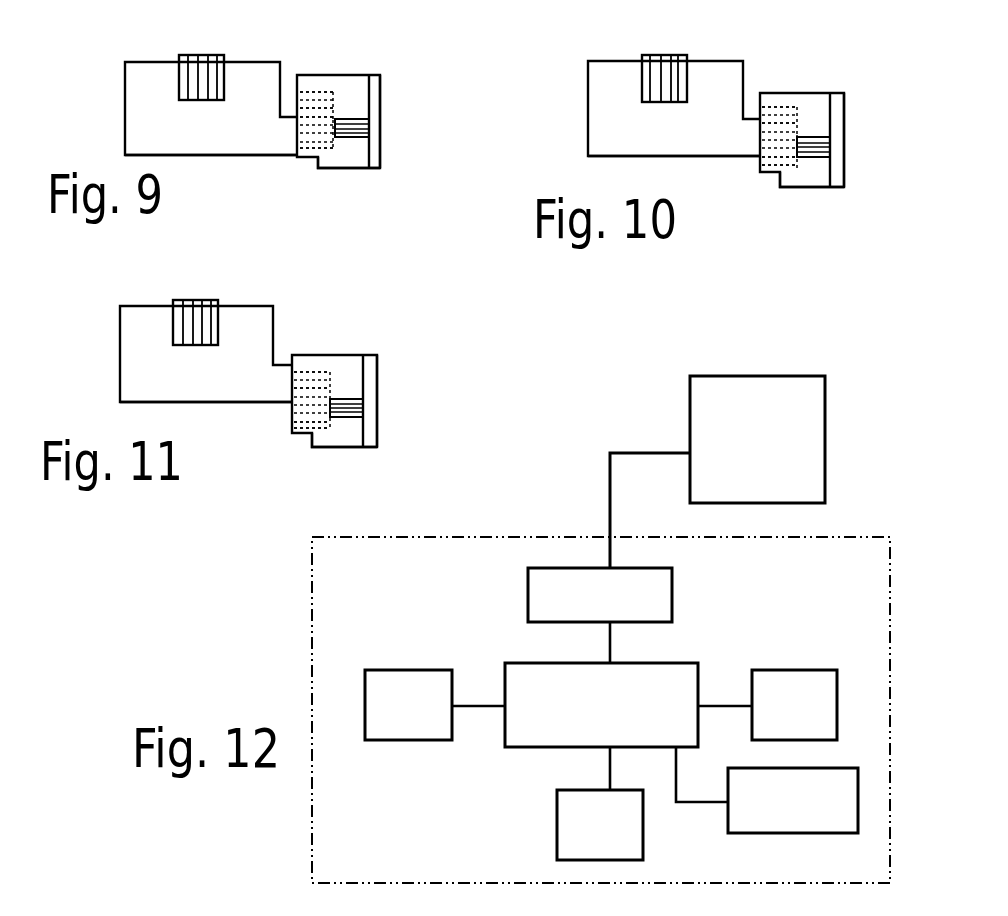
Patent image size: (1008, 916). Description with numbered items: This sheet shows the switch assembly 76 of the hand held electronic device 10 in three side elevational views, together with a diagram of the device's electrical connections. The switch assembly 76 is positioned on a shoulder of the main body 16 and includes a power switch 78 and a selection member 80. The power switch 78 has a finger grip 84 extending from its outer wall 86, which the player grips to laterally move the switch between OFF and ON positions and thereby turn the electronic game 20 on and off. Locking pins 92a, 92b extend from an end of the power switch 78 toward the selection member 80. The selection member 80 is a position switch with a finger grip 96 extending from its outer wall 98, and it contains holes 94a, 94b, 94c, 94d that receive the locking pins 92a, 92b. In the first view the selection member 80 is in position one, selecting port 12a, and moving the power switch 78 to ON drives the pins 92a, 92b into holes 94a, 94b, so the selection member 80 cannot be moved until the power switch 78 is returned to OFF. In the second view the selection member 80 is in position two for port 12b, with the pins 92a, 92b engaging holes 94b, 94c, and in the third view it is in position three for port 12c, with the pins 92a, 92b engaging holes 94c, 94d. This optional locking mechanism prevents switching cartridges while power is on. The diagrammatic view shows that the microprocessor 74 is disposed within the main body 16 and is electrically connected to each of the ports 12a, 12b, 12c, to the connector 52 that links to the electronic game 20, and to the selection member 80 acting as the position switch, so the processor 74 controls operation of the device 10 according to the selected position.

In FIG. 12, the hand held electronic device 10 is at (293, 627).
In FIG. 12, the game cartridge port 12a is at (797, 670).
In FIG. 12, the game cartridge port 12b is at (400, 670).
In FIG. 12, the game cartridge port 12c is at (556, 837).
In FIG. 12, the main body 16 is at (528, 536).
In FIG. 12, the hand held electronic game 20 is at (800, 403).
In FIG. 12, the connector 52 is at (530, 592).
In FIG. 12, the microprocessor 74 is at (683, 672).
In FIG. 9, the switch assembly 76 is at (117, 72).
In FIG. 10, the switch assembly 76 is at (580, 74).
In FIG. 11, the switch assembly 76 is at (110, 318).
In FIG. 9, the power switch 78 is at (265, 54).
In FIG. 10, the power switch 78 is at (714, 54).
In FIG. 11, the power switch 78 is at (276, 298).
In FIG. 9, the selection member 80 is at (389, 160).
In FIG. 10, the selection member 80 is at (852, 192).
In FIG. 11, the selection member 80 is at (387, 437).
In FIG. 12, the selection member 80 is at (745, 813).
In FIG. 9, the finger grip 84 is at (195, 78).
In FIG. 10, the finger grip 84 is at (662, 78).
In FIG. 11, the finger grip 84 is at (190, 322).
In FIG. 9, the outer wall 86 is at (140, 125).
In FIG. 10, the outer wall 86 is at (625, 125).
In FIG. 11, the outer wall 86 is at (150, 370).
In FIG. 9, the locking pin 92a is at (297, 143).
In FIG. 10, the locking pin 92a is at (758, 145).
In FIG. 11, the locking pin 92a is at (293, 392).
In FIG. 9, the locking pin 92b is at (298, 128).
In FIG. 10, the locking pin 92b is at (760, 128).
In FIG. 11, the locking pin 92b is at (292, 373).
In FIG. 9, the hole 94a is at (335, 148).
In FIG. 10, the hole 94a is at (794, 167).
In FIG. 11, the hole 94a is at (330, 425).
In FIG. 9, the hole 94b is at (345, 108).
In FIG. 10, the hole 94b is at (770, 170).
In FIG. 11, the hole 94b is at (306, 432).
In FIG. 9, the hole 94c is at (343, 118).
In FIG. 10, the hole 94c is at (800, 122).
In FIG. 11, the hole 94c is at (333, 395).
In FIG. 9, the hole 94d is at (332, 92).
In FIG. 10, the hole 94d is at (780, 106).
In FIG. 11, the hole 94d is at (330, 368).
In FIG. 9, the finger grip 96 is at (343, 127).
In FIG. 10, the finger grip 96 is at (813, 136).
In FIG. 11, the finger grip 96 is at (348, 402).
In FIG. 9, the outer wall 98 is at (342, 160).
In FIG. 10, the outer wall 98 is at (818, 178).
In FIG. 11, the outer wall 98 is at (337, 437).